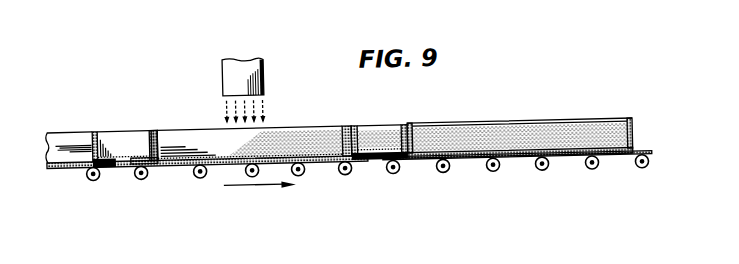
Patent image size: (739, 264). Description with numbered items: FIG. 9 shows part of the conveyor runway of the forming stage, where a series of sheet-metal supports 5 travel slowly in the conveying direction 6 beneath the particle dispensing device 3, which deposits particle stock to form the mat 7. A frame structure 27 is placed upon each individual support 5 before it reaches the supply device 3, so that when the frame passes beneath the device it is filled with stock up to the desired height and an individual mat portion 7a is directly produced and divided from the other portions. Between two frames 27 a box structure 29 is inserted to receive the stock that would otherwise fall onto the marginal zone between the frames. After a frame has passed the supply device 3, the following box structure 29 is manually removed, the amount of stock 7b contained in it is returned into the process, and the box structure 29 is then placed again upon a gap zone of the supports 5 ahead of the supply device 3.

The particle dispensing device 3 is at (265, 80).
The sheet-metal supports 5 is at (73, 169).
The conveying direction 6 is at (256, 193).
The mat 7 is at (305, 136).
The mat portion 7a is at (479, 138).
The amount of stock 7b is at (367, 134).
The frame structure 27 is at (67, 134).
The box structure 29 is at (124, 135).